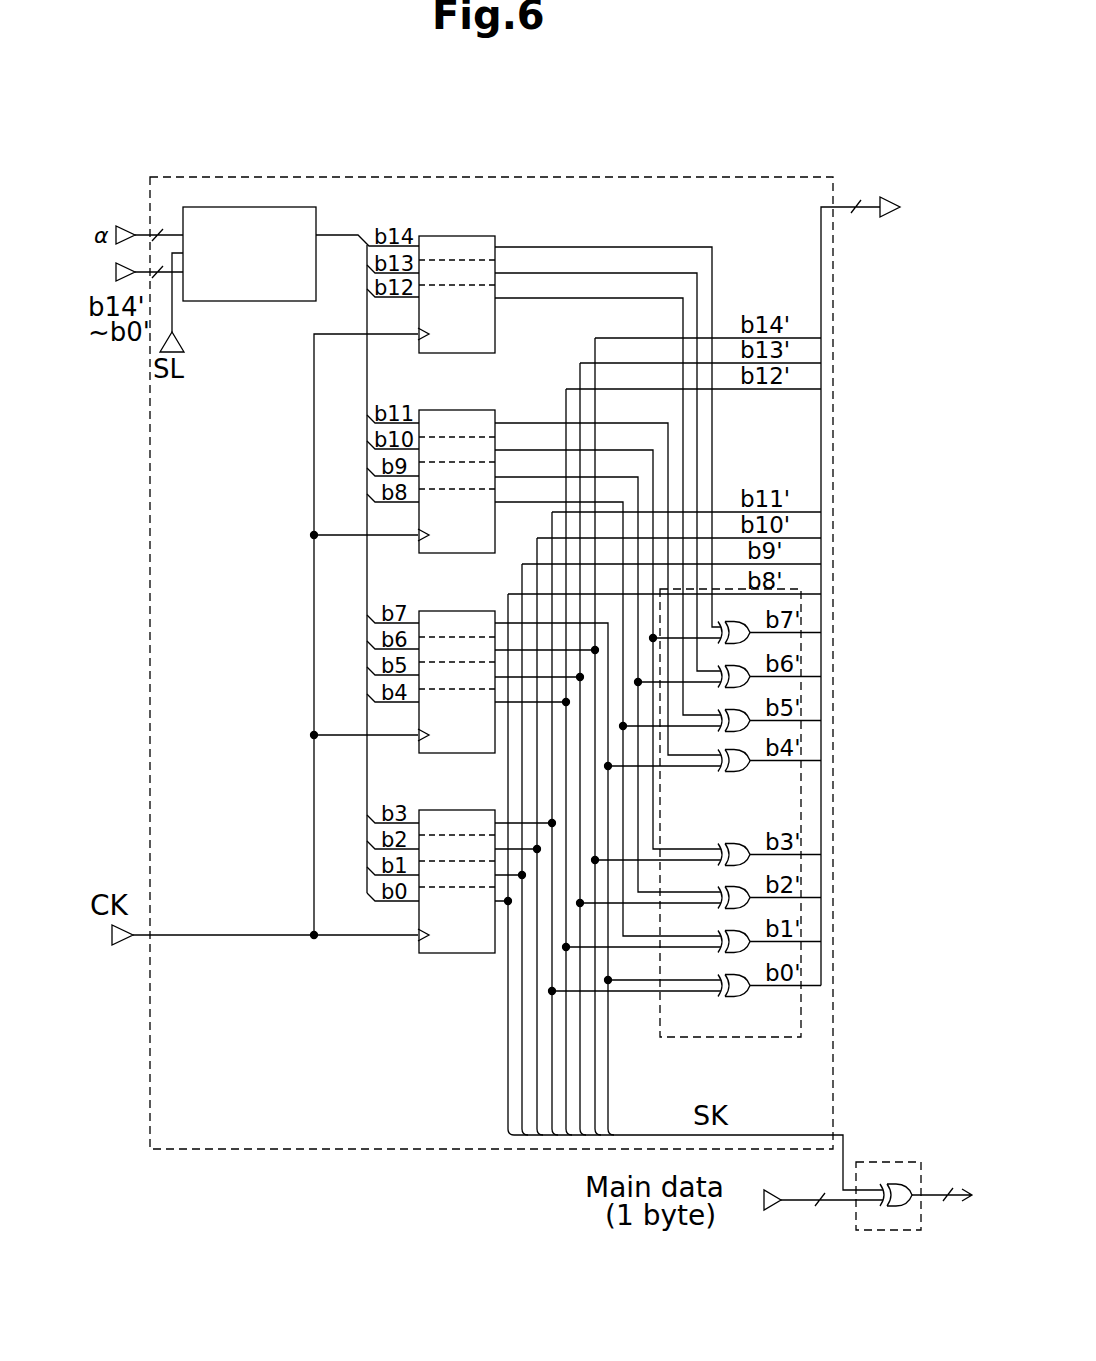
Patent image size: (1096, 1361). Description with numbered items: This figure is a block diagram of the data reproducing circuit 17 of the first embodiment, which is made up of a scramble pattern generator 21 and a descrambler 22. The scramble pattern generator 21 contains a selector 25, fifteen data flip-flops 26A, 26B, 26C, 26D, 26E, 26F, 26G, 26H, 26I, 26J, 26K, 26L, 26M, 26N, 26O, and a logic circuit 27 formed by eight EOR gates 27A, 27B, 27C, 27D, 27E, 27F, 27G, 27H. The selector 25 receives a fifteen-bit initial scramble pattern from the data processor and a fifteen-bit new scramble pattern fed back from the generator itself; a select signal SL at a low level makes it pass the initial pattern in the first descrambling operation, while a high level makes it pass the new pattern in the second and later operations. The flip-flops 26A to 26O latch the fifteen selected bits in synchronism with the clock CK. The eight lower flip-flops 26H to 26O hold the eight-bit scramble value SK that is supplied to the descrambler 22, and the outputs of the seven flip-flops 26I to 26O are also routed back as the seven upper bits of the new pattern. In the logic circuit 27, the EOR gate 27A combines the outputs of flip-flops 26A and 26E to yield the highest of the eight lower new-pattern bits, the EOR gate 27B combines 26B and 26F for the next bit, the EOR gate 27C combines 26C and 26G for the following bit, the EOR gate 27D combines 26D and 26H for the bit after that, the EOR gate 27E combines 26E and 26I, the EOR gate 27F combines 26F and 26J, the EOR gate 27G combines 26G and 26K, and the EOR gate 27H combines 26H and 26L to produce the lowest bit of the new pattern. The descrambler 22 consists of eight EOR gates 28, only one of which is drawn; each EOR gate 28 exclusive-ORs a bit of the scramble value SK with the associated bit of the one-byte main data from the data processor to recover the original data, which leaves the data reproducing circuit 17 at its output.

The data reproducing circuit 17 is at (897, 170).
The scramble pattern generator 21 is at (576, 176).
The descrambler 22 is at (902, 1161).
The selector 25 is at (272, 302).
The data flip-flop 26A is at (457, 249).
The data flip-flop 26B is at (457, 274).
The data flip-flop 26C is at (436, 354).
The data flip-flop 26D is at (457, 426).
The data flip-flop 26E is at (457, 451).
The data flip-flop 26F is at (457, 478).
The data flip-flop 26G is at (436, 554).
The data flip-flop 26H is at (457, 626).
The data flip-flop 26I is at (457, 652).
The data flip-flop 26J is at (457, 678).
The data flip-flop 26K is at (436, 754).
The data flip-flop 26L is at (457, 825).
The data flip-flop 26M is at (457, 851).
The data flip-flop 26N is at (457, 876).
The data flip-flop 26O is at (436, 954).
The logic circuit 27 is at (781, 1038).
The EOR gate 27A is at (724, 621).
The EOR gate 27B is at (728, 660).
The EOR gate 27C is at (724, 709).
The EOR gate 27D is at (724, 750).
The EOR gate 27E is at (724, 844).
The EOR gate 27F is at (724, 887).
The EOR gate 27G is at (724, 931).
The EOR gate 27H is at (724, 996).
The EOR gate 28 is at (897, 1209).